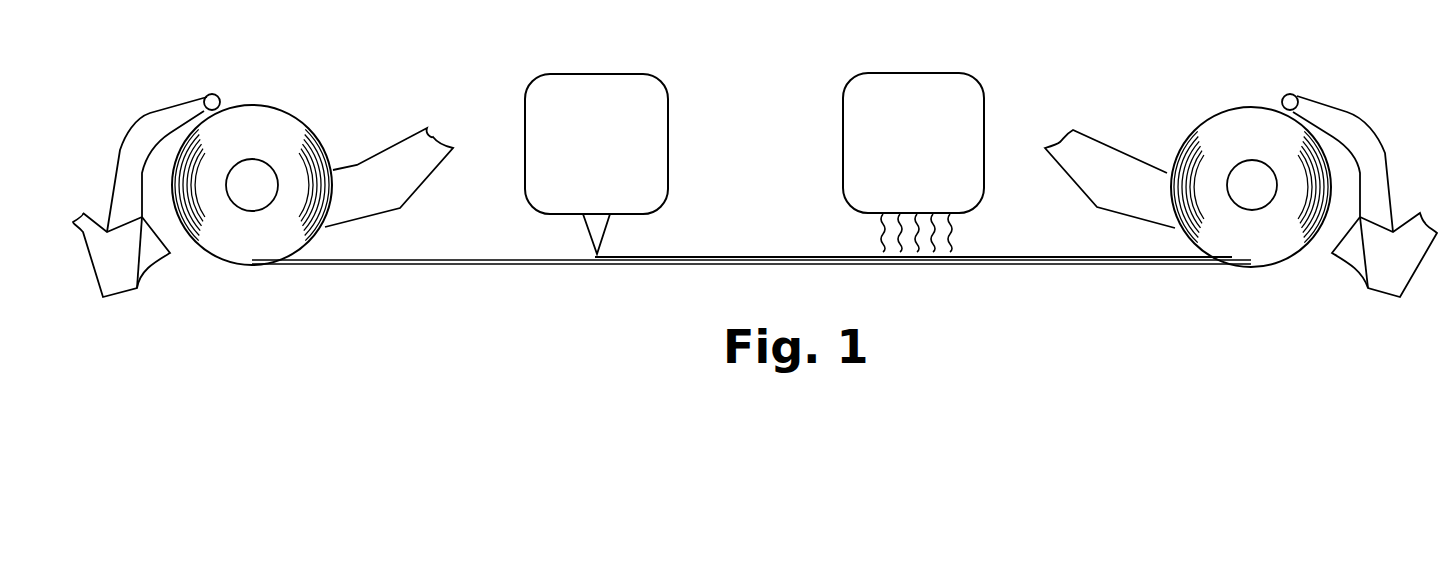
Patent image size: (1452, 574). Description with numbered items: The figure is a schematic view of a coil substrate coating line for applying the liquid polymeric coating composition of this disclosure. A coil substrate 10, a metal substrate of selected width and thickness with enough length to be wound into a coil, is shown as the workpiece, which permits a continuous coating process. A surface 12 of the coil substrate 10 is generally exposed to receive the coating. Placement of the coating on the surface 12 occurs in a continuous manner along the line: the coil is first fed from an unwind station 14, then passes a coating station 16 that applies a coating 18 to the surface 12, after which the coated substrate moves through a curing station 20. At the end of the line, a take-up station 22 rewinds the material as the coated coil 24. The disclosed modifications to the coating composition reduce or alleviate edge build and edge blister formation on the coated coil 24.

The coil substrate 10 is at (212, 233).
The surface 12 is at (462, 259).
The unwind station 14 is at (155, 104).
The coating station 16 is at (596, 164).
The coating 18 is at (741, 257).
The curing station 20 is at (913, 162).
The take-up station 22 is at (1345, 104).
The coated coil 24 is at (1248, 123).